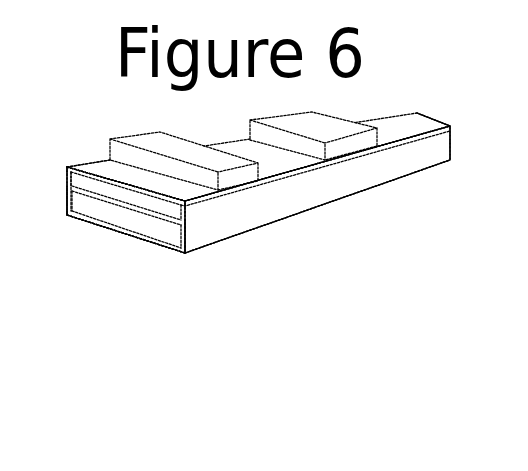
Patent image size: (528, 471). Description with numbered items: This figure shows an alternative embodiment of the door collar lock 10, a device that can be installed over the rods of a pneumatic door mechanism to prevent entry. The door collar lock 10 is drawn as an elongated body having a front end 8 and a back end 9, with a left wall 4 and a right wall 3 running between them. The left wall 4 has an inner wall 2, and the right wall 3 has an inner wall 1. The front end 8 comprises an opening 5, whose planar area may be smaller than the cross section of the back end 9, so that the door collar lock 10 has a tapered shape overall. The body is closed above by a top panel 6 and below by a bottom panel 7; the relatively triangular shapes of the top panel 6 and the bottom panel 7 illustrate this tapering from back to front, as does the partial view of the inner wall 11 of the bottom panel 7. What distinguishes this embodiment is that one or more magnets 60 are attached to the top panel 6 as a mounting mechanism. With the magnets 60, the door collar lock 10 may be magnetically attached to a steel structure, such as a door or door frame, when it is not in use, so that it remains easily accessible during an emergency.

The inner wall of right wall 1 is at (156, 236).
The inner wall of left wall 2 is at (105, 202).
The right wall 3 is at (299, 209).
The left wall 4 is at (84, 139).
The opening 5 is at (74, 208).
The top panel 6 is at (279, 171).
The bottom panel 7 is at (324, 223).
The front end 8 is at (80, 245).
The back end 9 is at (472, 122).
The door collar lock 10 is at (392, 227).
The inner wall of bottom panel 11 is at (163, 226).
The magnets 60 is at (185, 151).